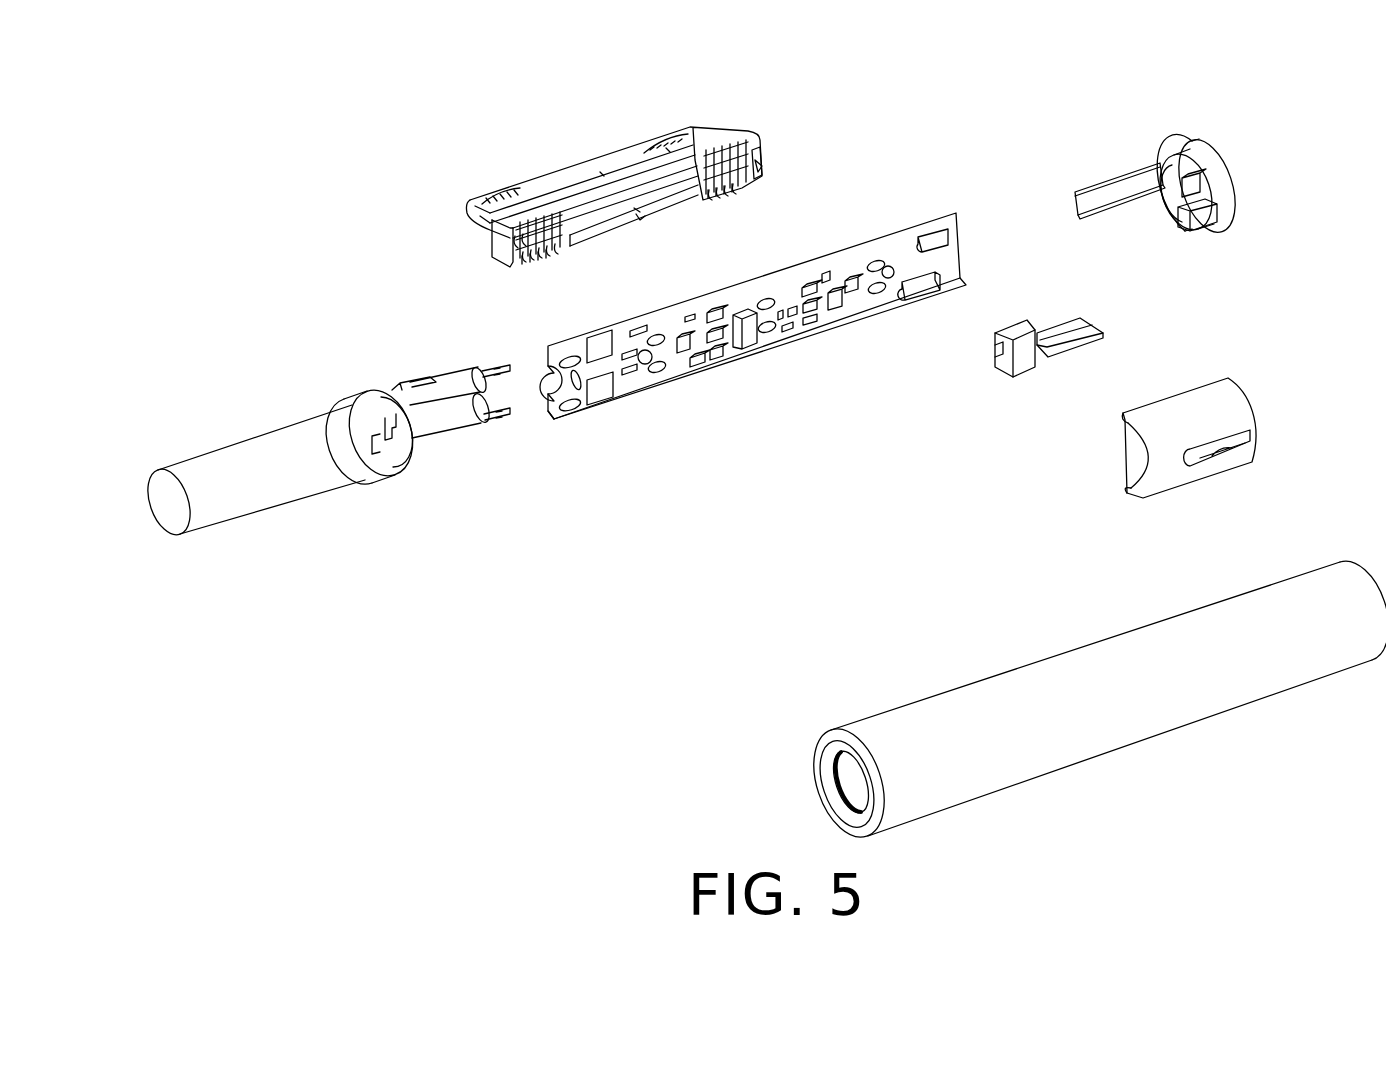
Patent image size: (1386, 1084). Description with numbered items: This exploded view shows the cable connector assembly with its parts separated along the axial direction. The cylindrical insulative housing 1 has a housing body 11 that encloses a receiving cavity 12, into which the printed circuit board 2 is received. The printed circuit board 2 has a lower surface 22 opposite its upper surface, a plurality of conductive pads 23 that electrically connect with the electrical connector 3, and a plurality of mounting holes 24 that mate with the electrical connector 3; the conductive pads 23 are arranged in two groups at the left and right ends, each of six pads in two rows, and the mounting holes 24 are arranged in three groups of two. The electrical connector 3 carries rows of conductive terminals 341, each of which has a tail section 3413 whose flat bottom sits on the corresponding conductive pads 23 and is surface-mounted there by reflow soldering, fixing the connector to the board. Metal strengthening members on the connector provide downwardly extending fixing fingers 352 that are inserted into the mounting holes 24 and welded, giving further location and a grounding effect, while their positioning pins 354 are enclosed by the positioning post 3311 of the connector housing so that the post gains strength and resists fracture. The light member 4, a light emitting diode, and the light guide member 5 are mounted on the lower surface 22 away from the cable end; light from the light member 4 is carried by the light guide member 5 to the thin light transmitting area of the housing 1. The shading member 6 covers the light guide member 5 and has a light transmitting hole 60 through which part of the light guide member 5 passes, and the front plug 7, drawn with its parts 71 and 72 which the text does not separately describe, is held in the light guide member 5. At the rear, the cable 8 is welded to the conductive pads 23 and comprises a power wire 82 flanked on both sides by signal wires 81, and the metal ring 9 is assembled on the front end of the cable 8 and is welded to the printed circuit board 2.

The insulative housing 1 is at (995, 640).
The housing body 11 is at (1180, 658).
The receiving cavity 12 is at (845, 780).
The printed circuit board 2 is at (640, 380).
The lower surface 22 is at (837, 317).
The conductive pads 23 is at (600, 392).
The mounting holes 24 is at (662, 362).
The electrical connector 3 is at (782, 112).
The positioning post 3311 is at (762, 165).
The positioning pins 354 is at (765, 168).
The conductive terminals 341 is at (728, 187).
The fixing fingers 352 is at (492, 238).
The tail section 3413 is at (560, 260).
The light member 4 is at (938, 245).
The light guide member 5 is at (1118, 300).
The shading member 6 is at (1275, 390).
The light transmitting hole 60 is at (1205, 451).
The front plug 7 is at (1242, 142).
The ring body 71 is at (1230, 196).
The plate 72 is at (1103, 190).
The cable 8 is at (280, 463).
The signal wires 81 is at (475, 427).
The power wire 82 is at (477, 410).
The metal ring 9 is at (385, 427).